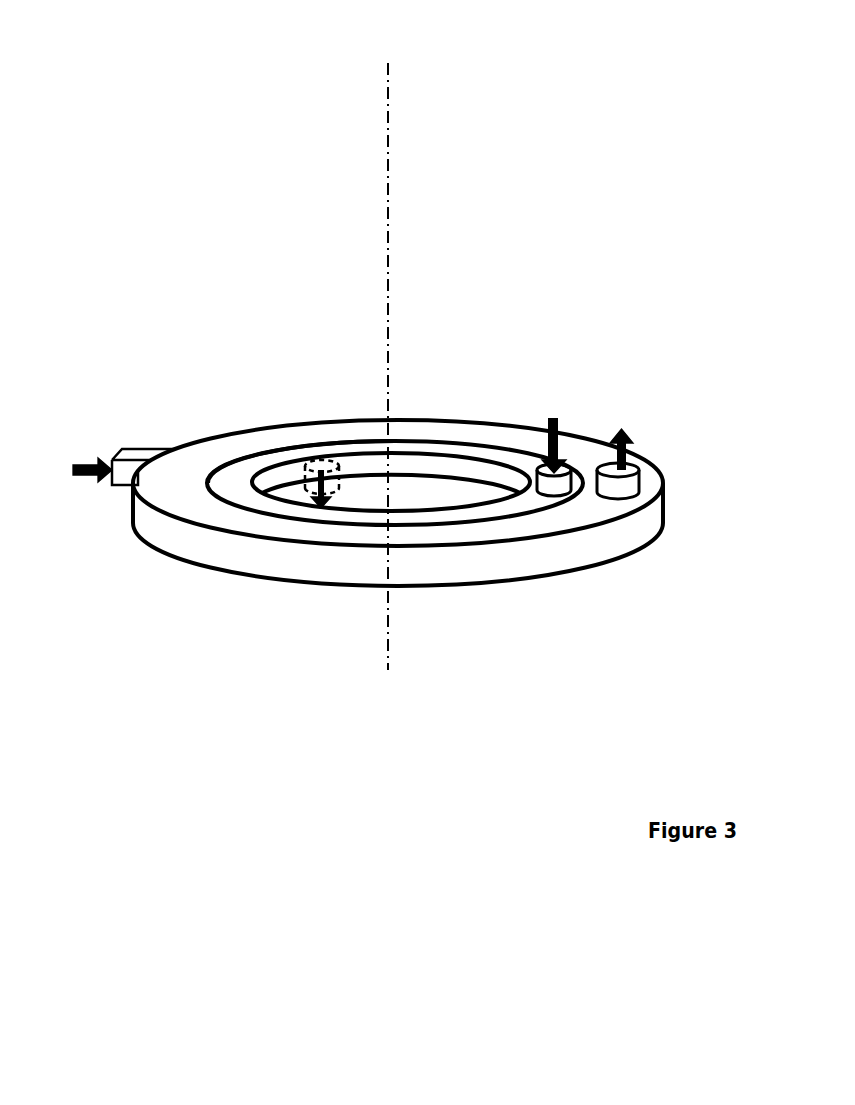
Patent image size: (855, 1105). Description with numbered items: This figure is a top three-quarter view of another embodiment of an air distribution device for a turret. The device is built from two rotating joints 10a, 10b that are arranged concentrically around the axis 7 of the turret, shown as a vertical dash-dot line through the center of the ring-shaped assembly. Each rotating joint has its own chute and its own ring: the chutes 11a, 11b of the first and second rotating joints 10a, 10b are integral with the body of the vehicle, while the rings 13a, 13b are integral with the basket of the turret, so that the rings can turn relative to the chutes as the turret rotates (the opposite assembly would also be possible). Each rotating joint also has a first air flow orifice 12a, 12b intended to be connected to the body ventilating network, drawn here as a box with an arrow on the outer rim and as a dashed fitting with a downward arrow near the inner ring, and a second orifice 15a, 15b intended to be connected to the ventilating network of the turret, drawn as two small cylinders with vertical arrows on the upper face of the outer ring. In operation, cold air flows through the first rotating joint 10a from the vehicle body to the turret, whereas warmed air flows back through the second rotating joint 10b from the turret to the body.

The axis of the turret 7 is at (392, 119).
The first rotating joint 10a is at (188, 556).
The second rotating joint 10b is at (411, 462).
The chute of the first rotating joint 11a is at (478, 570).
The chute of the second rotating joint 11b is at (367, 462).
The first air flow orifice of the first rotating joint 12a is at (128, 468).
The first air flow orifice of the second rotating joint 12b is at (335, 497).
The ring of the first rotating joint 13a is at (478, 430).
The ring of the second rotating joint 13b is at (233, 478).
The second orifice of the first rotating joint 15a is at (627, 488).
The second orifice of the second rotating joint 15b is at (563, 470).